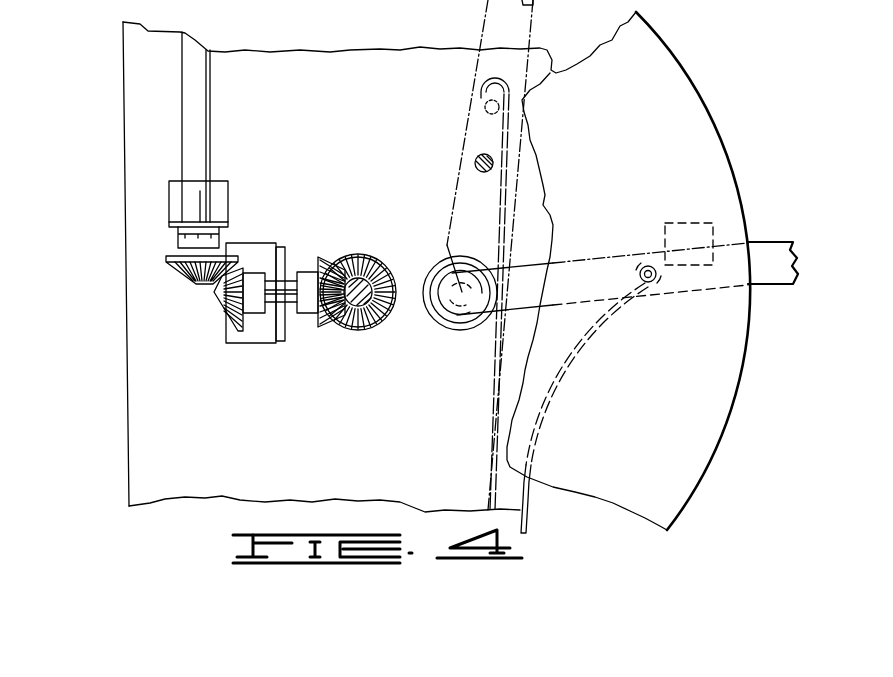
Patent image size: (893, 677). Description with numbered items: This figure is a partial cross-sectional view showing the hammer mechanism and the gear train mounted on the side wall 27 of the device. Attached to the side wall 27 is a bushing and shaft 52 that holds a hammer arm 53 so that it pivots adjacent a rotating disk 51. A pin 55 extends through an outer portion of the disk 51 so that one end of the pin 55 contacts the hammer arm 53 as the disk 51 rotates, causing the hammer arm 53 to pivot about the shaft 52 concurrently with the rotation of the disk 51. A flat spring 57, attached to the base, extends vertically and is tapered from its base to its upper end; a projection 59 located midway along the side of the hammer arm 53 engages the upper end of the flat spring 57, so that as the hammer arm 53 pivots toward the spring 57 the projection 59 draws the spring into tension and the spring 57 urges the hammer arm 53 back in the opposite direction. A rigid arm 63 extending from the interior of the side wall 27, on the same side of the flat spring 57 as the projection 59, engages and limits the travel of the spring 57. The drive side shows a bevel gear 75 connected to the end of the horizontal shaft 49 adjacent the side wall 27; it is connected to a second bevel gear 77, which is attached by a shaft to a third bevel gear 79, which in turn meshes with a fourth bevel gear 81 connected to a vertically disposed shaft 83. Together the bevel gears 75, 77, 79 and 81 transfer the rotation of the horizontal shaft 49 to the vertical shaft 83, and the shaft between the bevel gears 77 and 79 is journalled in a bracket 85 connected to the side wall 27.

The side wall 27 is at (147, 79).
The shaft 49 is at (372, 335).
The disk 51 is at (700, 450).
The bushing and shaft 52 is at (441, 240).
The hammer arm 53 is at (513, 36).
The pin 55 is at (685, 238).
The flat spring 57 is at (487, 460).
The projection 59 is at (488, 106).
The rigid arm 63 is at (439, 156).
The bevel gear 75 is at (382, 320).
The second bevel gear 77 is at (330, 330).
The third bevel gear 79 is at (226, 318).
The fourth bevel gear 81 is at (180, 257).
The vertically disposed shaft 83 is at (192, 87).
The bracket 85 is at (285, 245).